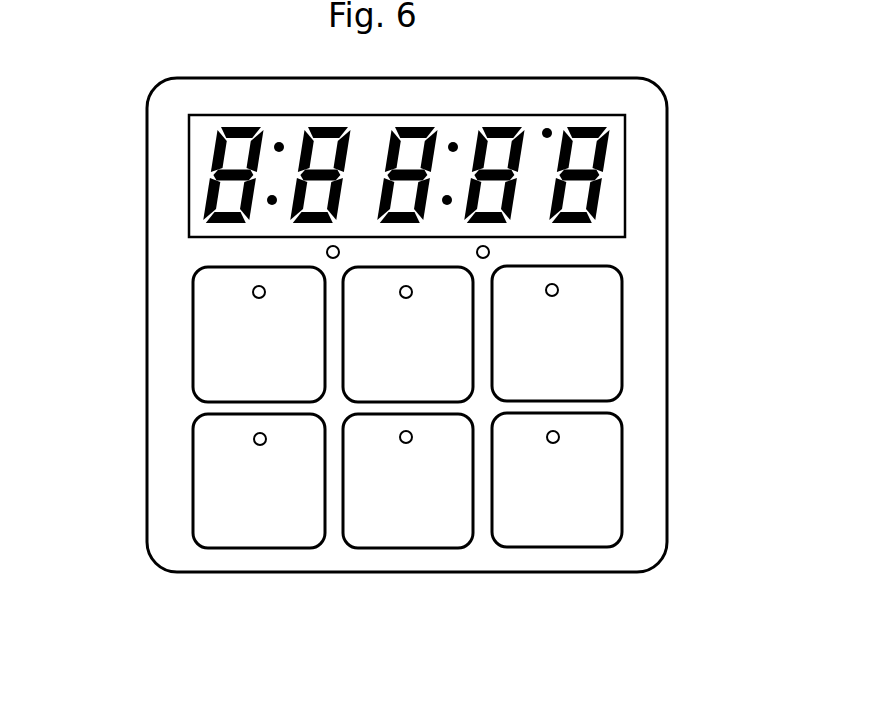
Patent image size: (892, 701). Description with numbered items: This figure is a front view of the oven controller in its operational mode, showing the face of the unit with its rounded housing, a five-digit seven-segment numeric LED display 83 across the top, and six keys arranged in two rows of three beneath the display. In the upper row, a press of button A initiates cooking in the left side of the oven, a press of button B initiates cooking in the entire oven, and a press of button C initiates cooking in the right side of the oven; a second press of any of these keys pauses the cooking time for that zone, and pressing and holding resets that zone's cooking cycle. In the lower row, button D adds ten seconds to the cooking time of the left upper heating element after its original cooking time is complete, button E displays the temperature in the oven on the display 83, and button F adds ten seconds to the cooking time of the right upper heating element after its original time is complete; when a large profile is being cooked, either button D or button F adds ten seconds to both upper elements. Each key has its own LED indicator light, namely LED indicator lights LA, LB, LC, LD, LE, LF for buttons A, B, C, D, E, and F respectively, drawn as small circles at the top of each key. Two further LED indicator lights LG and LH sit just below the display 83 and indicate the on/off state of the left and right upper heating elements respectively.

The numeric LED display 83 is at (625, 184).
The button A is at (210, 358).
The button B is at (363, 380).
The button C is at (623, 375).
The button D is at (208, 538).
The button E is at (410, 532).
The button F is at (570, 533).
The LED indicator light LA is at (253, 293).
The LED indicator light LB is at (400, 292).
The LED indicator light LC is at (558, 289).
The LED indicator light LD is at (254, 444).
The LED indicator light LE is at (398, 437).
The LED indicator light LF is at (559, 440).
The LED indicator light LG is at (326, 253).
The LED indicator light LH is at (490, 252).